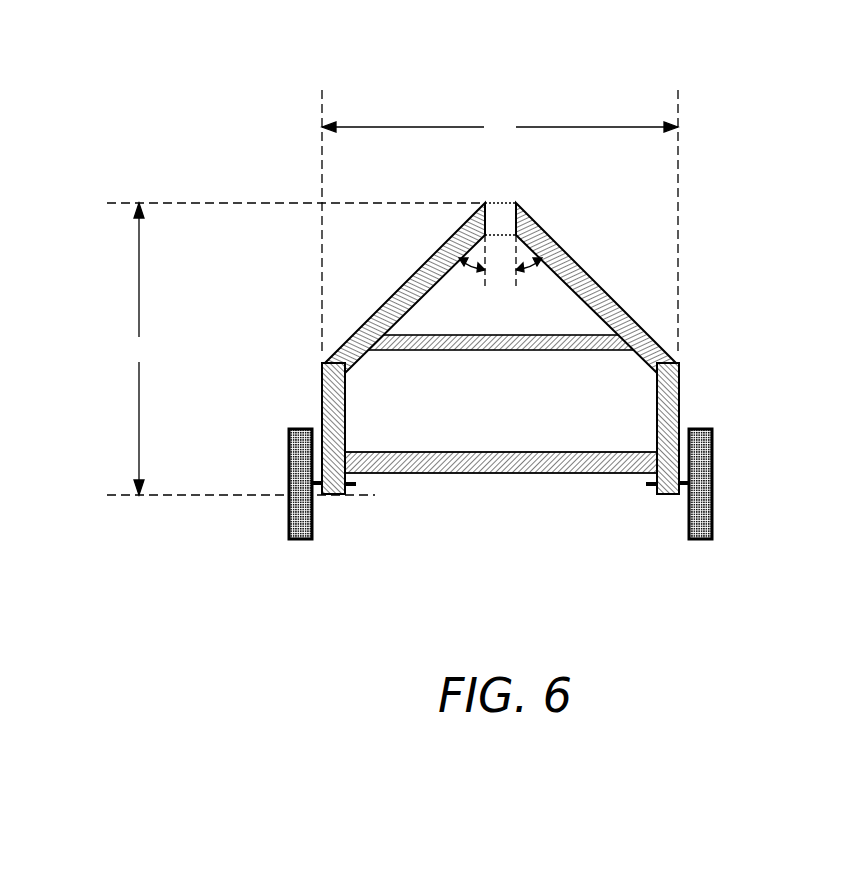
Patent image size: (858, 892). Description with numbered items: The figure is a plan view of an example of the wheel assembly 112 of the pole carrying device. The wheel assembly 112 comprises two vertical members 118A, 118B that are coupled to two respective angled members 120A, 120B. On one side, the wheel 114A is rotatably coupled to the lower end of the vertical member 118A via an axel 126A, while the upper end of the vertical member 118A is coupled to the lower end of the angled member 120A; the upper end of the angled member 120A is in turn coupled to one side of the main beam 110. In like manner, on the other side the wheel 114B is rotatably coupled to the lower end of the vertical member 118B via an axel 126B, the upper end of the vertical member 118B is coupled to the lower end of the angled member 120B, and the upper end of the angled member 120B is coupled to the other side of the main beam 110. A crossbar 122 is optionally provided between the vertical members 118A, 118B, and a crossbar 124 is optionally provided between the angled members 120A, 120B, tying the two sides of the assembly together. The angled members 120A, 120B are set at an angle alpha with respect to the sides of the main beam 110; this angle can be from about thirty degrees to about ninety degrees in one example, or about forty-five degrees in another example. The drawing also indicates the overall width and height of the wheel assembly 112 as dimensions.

The main beam 110 is at (502, 202).
The wheel assembly 112 is at (459, 279).
The wheel 114A is at (712, 516).
The wheel 114B is at (291, 512).
The vertical member 118A is at (680, 395).
The vertical member 118B is at (321, 394).
The angled member 120A is at (587, 272).
The angled member 120B is at (413, 272).
The crossbar 122 is at (539, 452).
The crossbar 124 is at (473, 352).
The axel 126A is at (651, 488).
The axel 126B is at (351, 488).